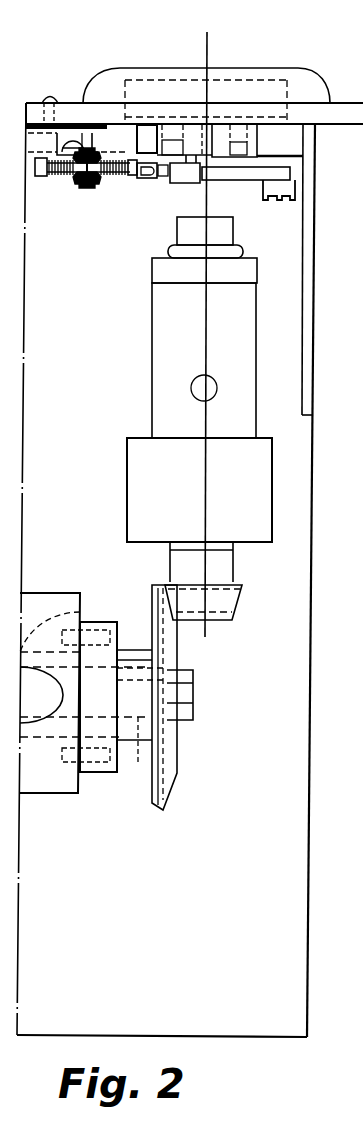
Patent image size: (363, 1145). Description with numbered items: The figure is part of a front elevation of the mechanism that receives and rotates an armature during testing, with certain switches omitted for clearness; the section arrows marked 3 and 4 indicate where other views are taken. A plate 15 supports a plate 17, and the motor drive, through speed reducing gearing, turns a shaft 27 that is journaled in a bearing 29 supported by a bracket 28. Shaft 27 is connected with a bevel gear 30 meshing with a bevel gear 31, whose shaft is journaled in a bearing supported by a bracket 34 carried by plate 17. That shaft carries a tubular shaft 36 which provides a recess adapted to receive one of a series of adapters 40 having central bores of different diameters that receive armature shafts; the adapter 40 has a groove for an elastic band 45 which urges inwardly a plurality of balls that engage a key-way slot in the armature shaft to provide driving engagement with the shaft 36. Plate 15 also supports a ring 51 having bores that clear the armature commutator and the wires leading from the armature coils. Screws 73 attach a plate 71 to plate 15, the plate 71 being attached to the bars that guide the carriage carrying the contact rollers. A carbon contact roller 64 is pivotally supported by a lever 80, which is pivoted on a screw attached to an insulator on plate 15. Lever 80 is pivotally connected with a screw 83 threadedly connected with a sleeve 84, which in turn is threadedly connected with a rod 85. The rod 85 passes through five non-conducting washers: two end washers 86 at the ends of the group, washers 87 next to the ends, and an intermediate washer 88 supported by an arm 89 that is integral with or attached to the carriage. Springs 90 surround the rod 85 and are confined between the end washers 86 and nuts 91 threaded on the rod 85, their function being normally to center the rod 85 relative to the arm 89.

The section line 3 is at (362, 384).
The section line 4 is at (207, 32).
The plate 15 is at (73, 103).
The plate 17 is at (315, 573).
The shaft 27 is at (155, 717).
The bracket 28 is at (57, 794).
The bearing 29 is at (102, 623).
The bevel gear 30 is at (166, 797).
The bevel gear 31 is at (238, 605).
The bracket 34 is at (272, 500).
The tubular shaft 36 is at (256, 374).
The adapter 40 is at (257, 276).
The elastic band 45 is at (243, 252).
The ring 51 is at (320, 80).
The carbon contact roller 64 is at (268, 196).
The plate 71 is at (102, 124).
The screws 73 is at (48, 103).
The lever 80 is at (245, 180).
The screw 83 is at (178, 184).
The sleeve 84 is at (152, 180).
The rod 85 is at (108, 176).
The end washers 86 is at (99, 162).
The washers 87 is at (79, 186).
The intermediate washer 88 is at (92, 149).
The arm 89 is at (86, 186).
The springs 90 is at (53, 177).
The nuts 91 is at (42, 178).